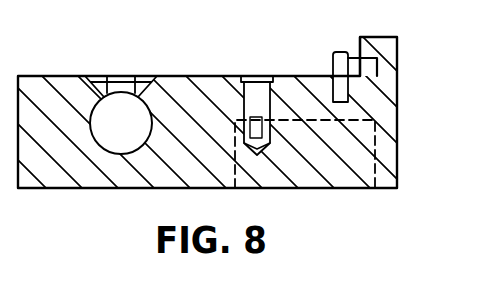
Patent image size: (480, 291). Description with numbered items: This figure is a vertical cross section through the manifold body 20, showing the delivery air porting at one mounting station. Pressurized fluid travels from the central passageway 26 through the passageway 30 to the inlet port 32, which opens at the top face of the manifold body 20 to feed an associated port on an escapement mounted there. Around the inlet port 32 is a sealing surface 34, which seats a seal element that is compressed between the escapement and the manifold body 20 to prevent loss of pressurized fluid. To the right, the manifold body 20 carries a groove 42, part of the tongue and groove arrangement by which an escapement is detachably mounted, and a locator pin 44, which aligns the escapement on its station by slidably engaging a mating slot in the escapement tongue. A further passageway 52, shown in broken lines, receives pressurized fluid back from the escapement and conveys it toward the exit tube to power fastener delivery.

The manifold body 20 is at (78, 191).
The central passageway 26 is at (126, 156).
The passageway 30 is at (156, 77).
The inlet port 32 is at (121, 76).
The sealing surface 34 is at (85, 76).
The groove 42 is at (359, 57).
The locator pin 44 is at (332, 71).
The passageway 52 is at (260, 74).